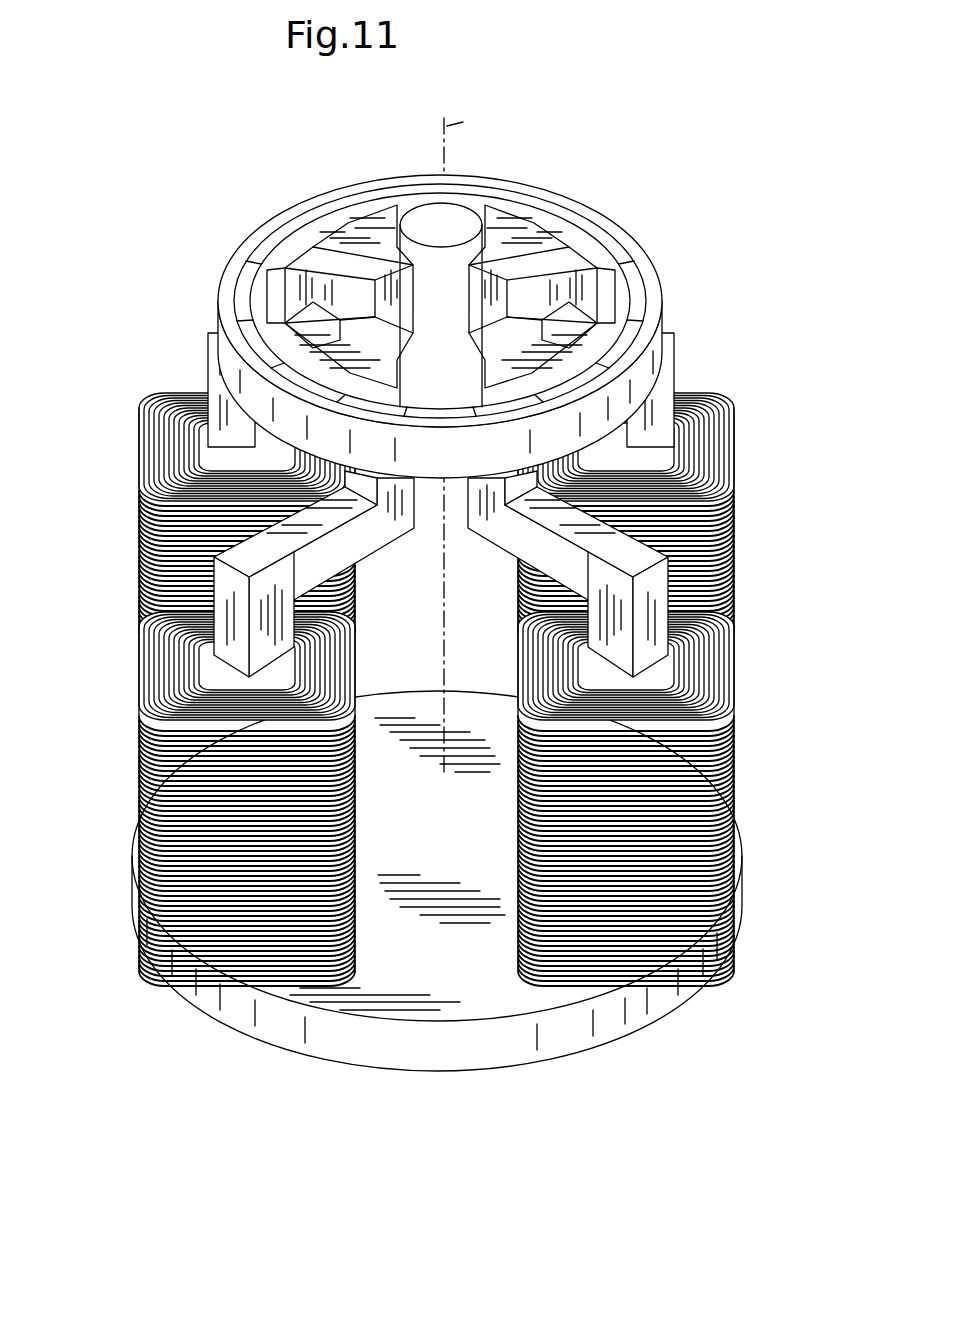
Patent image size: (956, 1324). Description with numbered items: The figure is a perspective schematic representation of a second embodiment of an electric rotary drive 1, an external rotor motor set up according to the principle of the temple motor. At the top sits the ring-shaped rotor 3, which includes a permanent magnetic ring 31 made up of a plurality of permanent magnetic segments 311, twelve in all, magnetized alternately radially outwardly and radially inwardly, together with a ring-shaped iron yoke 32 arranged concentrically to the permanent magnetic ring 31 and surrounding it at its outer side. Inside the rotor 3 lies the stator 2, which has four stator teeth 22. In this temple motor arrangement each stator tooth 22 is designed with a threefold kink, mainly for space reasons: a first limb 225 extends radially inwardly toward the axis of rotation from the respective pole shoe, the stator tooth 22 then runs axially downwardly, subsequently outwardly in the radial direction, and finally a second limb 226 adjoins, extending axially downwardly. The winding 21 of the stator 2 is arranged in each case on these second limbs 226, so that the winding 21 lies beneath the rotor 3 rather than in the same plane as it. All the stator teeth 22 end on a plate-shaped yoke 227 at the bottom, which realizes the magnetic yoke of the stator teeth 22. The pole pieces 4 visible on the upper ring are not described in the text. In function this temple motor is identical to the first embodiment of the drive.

The electric rotary drive 1 is at (742, 222).
The stator 2 is at (742, 732).
The rotor 3 is at (228, 263).
The pole piece 4 is at (612, 270).
The winding 21 is at (152, 537).
The stator tooth 22 is at (207, 347).
The permanent magnetic ring 31 is at (636, 307).
The iron yoke 32 is at (330, 196).
The first limb 225 is at (363, 258).
The second limb 226 is at (212, 420).
The plate-shaped yoke 227 is at (550, 1048).
The permanent magnetic segments 311 is at (470, 210).